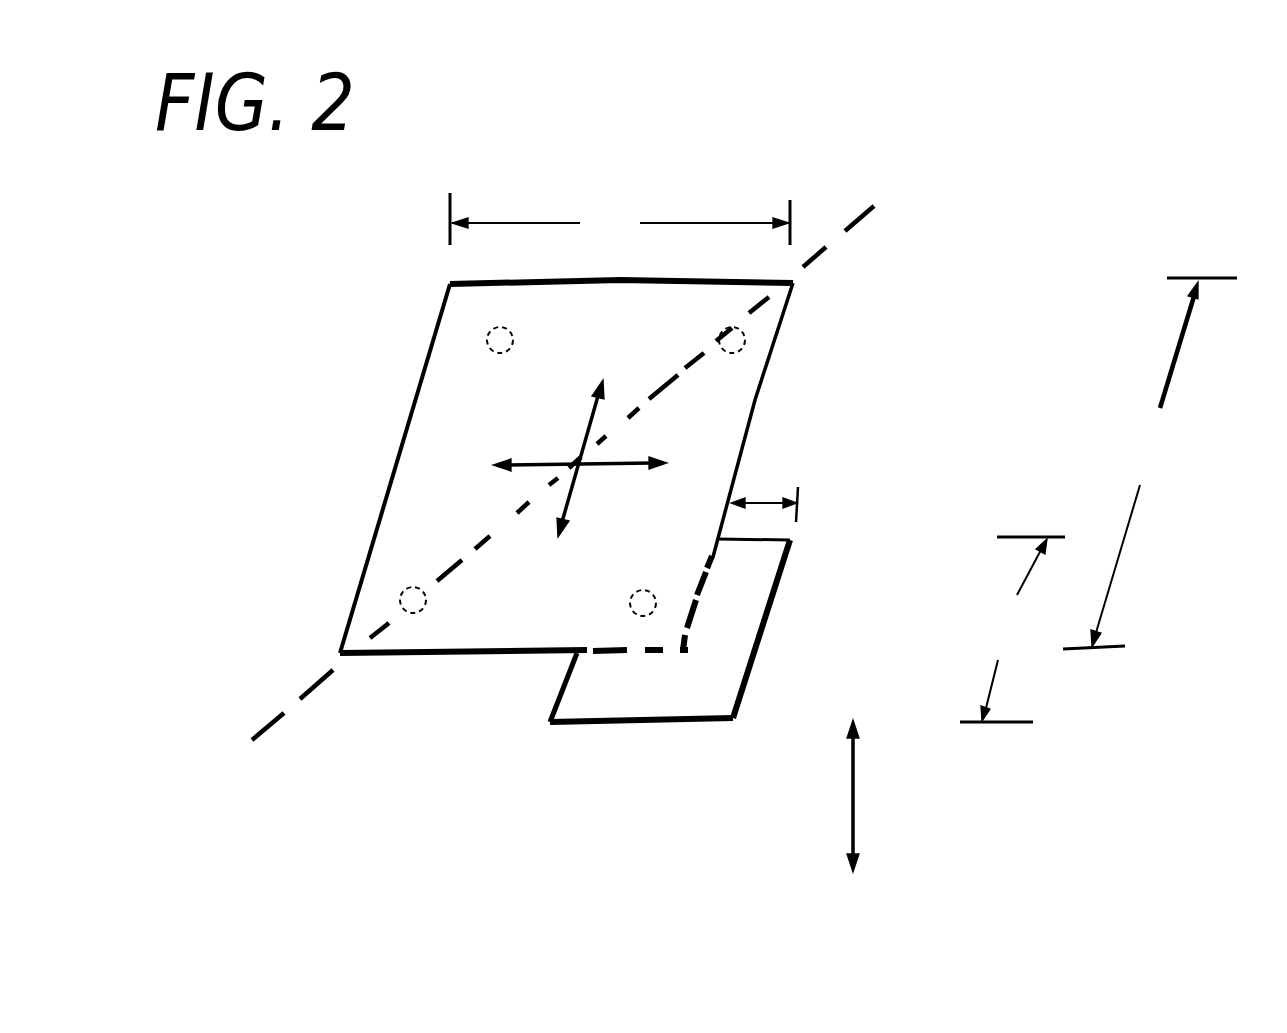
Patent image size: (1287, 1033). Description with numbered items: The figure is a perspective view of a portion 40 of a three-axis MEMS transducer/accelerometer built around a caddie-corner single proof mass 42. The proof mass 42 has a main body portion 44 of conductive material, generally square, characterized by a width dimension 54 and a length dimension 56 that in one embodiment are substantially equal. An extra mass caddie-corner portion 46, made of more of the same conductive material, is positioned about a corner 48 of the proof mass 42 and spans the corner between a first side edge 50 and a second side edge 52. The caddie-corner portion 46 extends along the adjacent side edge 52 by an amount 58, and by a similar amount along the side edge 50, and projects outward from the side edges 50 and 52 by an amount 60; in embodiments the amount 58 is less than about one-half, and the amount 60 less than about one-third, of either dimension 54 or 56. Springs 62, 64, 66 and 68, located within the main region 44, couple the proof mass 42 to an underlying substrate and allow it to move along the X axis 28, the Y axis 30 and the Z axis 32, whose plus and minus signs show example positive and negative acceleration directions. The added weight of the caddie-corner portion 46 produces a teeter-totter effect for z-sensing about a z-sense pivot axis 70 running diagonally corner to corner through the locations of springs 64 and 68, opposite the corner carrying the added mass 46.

The X axis 28 is at (612, 472).
The Y axis 30 is at (585, 430).
The Z axis 32 is at (857, 823).
The portion of three-axis MEMS transducer/accelerometer 40 is at (998, 151).
The proof mass 42 is at (422, 367).
The main body portion 44 is at (497, 623).
The extra mass caddie-corner portion 46 is at (677, 693).
The corner 48 is at (751, 749).
The first side edge 50 is at (423, 660).
The second side edge 52 is at (747, 441).
The width dimension 54 is at (620, 221).
The length dimension 56 is at (1150, 463).
The extension amount along side edge 58 is at (1012, 629).
The extension amount from side edges 60 is at (765, 500).
The spring 62 is at (512, 333).
The spring 64 is at (722, 331).
The spring 66 is at (650, 592).
The spring 68 is at (410, 590).
The z-sense pivot axis 70 is at (860, 223).